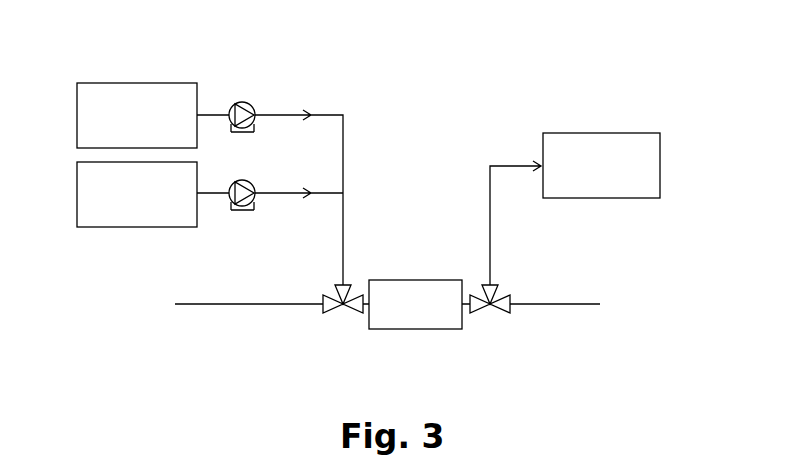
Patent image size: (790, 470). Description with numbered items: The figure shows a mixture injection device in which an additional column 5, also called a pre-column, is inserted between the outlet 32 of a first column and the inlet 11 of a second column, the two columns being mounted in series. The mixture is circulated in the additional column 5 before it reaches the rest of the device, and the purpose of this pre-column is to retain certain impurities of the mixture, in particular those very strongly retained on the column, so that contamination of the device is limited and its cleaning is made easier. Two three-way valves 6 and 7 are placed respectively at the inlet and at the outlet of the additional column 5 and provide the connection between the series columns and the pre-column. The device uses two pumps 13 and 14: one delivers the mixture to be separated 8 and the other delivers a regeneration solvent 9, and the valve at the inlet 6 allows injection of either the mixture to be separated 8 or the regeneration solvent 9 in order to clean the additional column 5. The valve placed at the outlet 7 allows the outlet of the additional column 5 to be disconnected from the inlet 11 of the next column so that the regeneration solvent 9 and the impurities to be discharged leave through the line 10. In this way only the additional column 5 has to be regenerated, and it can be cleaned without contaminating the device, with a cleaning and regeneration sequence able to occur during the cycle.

The additional column 5 is at (402, 317).
The three-way valve 6 is at (343, 282).
The three-way valve 7 is at (488, 282).
The mixture to be separated 8 is at (132, 92).
The regeneration solvent 9 is at (135, 215).
The line 10 is at (586, 140).
The inlet 11 is at (547, 307).
The pump 13 is at (242, 100).
The pump 14 is at (242, 213).
The outlet 32 is at (228, 307).